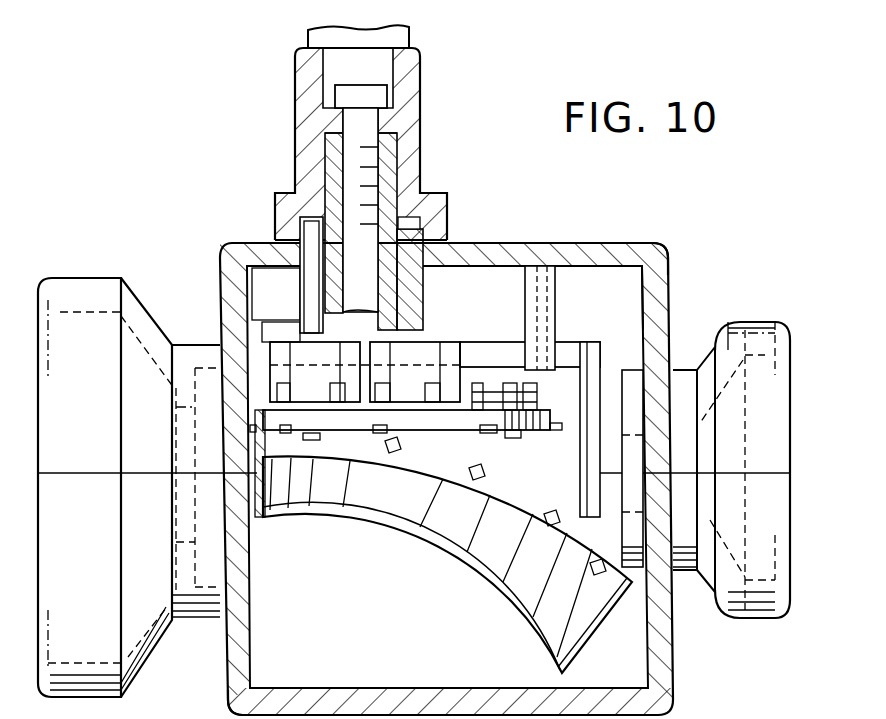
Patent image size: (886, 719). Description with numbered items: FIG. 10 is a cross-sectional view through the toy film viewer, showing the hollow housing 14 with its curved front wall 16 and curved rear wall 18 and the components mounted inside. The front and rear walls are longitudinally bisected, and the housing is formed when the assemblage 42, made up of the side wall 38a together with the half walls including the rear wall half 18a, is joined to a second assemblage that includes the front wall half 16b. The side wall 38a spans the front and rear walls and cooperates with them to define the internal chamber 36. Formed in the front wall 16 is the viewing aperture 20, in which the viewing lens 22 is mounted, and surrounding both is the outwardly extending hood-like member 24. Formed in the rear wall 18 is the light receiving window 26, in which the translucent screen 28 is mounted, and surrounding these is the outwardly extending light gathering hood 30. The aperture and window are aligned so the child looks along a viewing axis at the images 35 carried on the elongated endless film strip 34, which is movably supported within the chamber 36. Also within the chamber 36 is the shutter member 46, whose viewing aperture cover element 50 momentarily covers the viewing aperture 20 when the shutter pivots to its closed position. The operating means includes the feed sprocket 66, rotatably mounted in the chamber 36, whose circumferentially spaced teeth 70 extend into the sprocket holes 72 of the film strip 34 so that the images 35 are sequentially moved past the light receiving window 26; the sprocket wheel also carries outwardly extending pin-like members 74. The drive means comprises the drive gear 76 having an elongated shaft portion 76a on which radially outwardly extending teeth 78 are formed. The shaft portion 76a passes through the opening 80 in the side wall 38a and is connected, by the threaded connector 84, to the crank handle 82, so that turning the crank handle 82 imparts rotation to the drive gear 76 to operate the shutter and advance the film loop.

The housing 14 is at (612, 238).
The curved front wall 16 is at (668, 306).
The bifurcated front wall half 16b is at (676, 642).
The curved rear wall 18 is at (218, 266).
The bifurcated rear wall half 18a is at (228, 678).
The viewing aperture 20 is at (700, 497).
The viewing lens 22 is at (712, 442).
The hood-like member 24 is at (770, 322).
The light receiving window 26 is at (185, 516).
The translucent screen 28 is at (210, 428).
The light gathering hood 30 is at (74, 285).
The endless film strip 34 is at (434, 558).
The images 35 is at (533, 610).
The internal chamber 36 is at (627, 283).
The side wall 38a is at (549, 242).
The housing assemblage 42 is at (668, 232).
The shutter member 46 is at (480, 342).
The viewing aperture cover element 50 is at (598, 360).
The feed sprocket 66 is at (514, 446).
The teeth 70 is at (377, 431).
The sprocket holes 72 is at (470, 467).
The pin-like members 74 is at (503, 397).
The drive gear 76 is at (318, 153).
The elongated shaft portion 76a is at (410, 268).
The teeth 78 is at (363, 350).
The opening 80 is at (325, 238).
The crank handle 82 is at (297, 118).
The threaded connector 84 is at (381, 97).